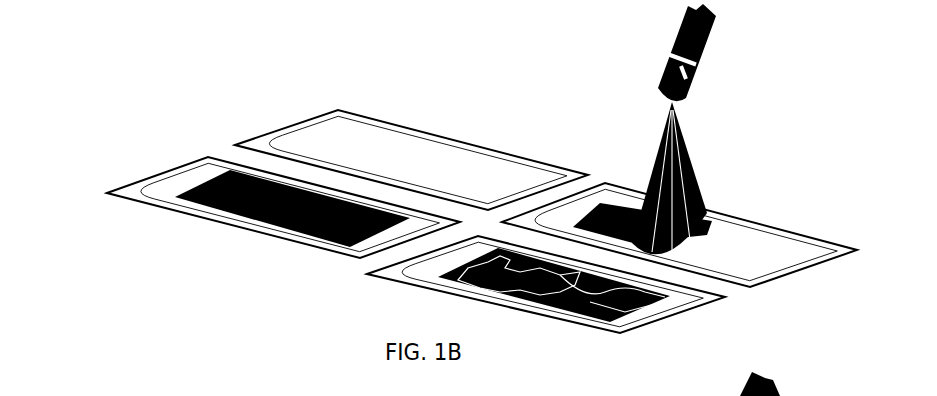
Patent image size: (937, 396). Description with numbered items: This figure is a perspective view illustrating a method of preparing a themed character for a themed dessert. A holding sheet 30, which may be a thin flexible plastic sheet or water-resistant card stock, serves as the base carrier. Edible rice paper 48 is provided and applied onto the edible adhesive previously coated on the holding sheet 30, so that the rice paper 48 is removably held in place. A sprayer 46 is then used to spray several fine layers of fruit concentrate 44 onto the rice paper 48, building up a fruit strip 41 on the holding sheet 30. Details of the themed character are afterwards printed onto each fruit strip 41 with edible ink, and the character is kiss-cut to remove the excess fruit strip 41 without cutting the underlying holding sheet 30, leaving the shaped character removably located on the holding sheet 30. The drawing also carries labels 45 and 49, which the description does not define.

The holding sheet 30 is at (302, 123).
The fruit strip 41 is at (273, 227).
The fruit concentrate 44 is at (407, 115).
The spray apparatus 45 is at (573, 1).
The sprayer 46 is at (707, 78).
The edible rice paper 48 is at (163, 197).
The printed pattern 49 is at (513, 300).